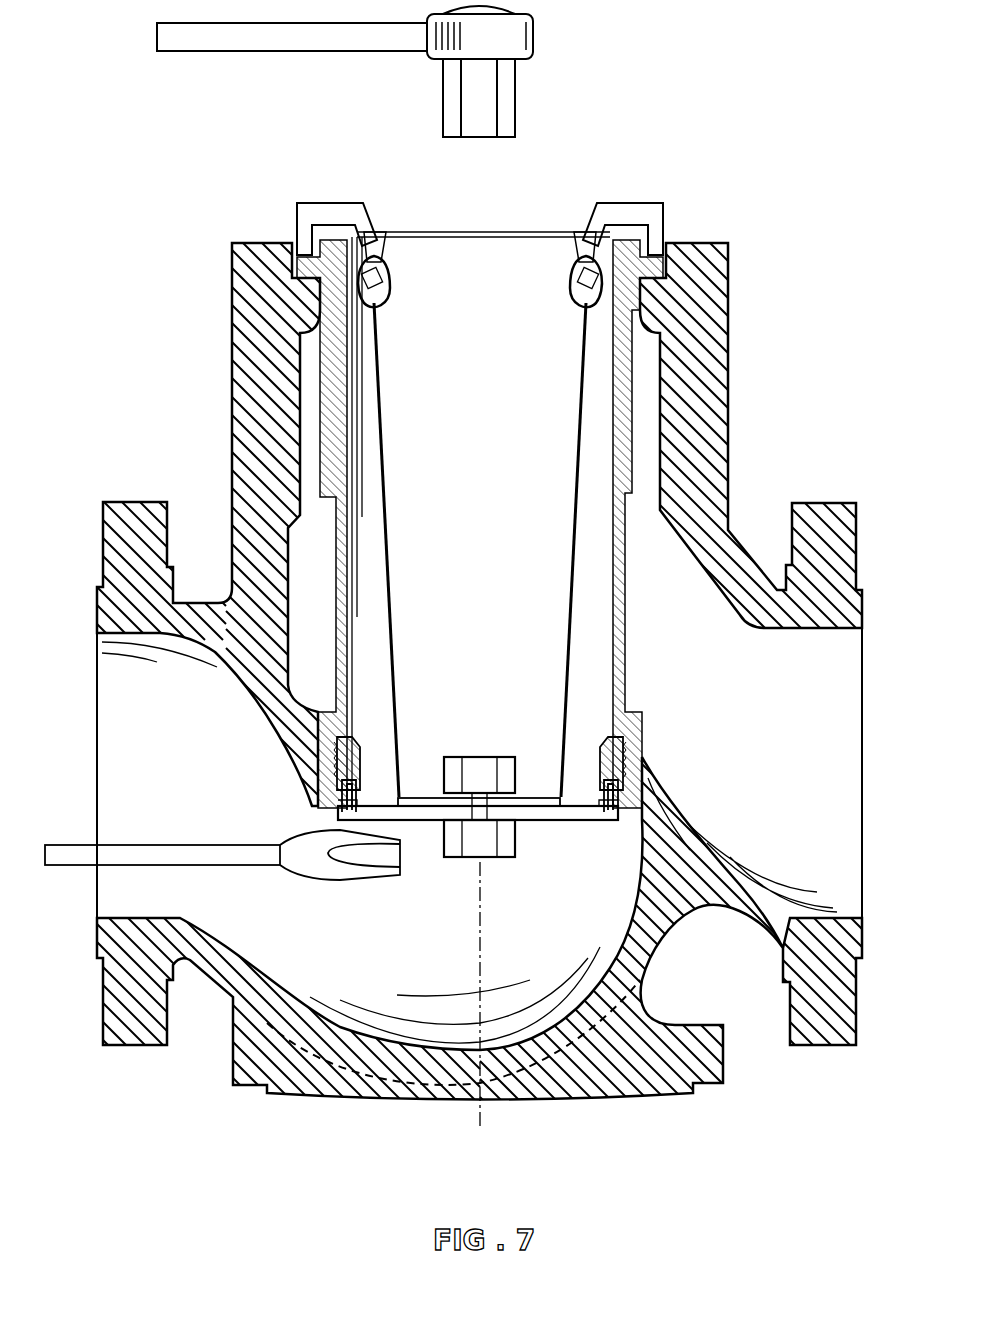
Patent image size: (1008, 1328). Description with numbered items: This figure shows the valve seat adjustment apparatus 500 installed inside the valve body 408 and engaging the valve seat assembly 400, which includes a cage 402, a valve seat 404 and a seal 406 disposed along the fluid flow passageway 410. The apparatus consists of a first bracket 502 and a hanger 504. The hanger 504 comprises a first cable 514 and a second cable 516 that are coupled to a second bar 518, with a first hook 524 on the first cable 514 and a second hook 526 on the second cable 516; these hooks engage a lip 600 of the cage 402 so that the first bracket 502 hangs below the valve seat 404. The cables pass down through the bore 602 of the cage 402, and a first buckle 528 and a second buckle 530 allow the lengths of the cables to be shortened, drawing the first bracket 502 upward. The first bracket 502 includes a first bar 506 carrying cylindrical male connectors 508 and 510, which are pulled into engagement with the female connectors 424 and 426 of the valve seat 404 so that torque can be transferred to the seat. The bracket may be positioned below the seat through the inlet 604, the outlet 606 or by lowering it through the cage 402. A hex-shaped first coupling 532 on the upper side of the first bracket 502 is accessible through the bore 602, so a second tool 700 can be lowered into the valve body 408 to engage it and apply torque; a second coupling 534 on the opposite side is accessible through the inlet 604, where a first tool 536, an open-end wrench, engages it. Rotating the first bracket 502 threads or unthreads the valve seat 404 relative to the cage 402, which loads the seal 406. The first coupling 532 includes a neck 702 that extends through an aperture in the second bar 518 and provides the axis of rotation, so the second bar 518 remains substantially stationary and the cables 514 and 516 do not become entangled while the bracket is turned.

The second tool 700 is at (533, 40).
The first hook 524 is at (308, 210).
The second hook 526 is at (650, 212).
The first buckle 528 is at (378, 268).
The second buckle 530 is at (580, 265).
The lip 600 is at (633, 238).
The valve body 408 is at (708, 268).
The bore 602 is at (600, 322).
The first cable 514 is at (380, 362).
The second cable 516 is at (580, 362).
The hanger 504 is at (532, 752).
The valve seat assembly 400 is at (642, 664).
The valve seat 404 is at (690, 759).
The outlet 606 is at (862, 663).
The cage 402 is at (632, 740).
The female connector 426 is at (620, 778).
The female connector 424 is at (345, 765).
The first coupling 532 is at (470, 757).
The second bar 518 is at (430, 797).
The male connector 508 is at (350, 800).
The male connector 510 is at (608, 815).
The inlet 604 is at (97, 800).
The neck 702 is at (490, 797).
The seal 406 is at (642, 800).
The first tool 536 is at (292, 878).
The first bar 506 is at (440, 822).
The first bracket 502 is at (538, 886).
The fluid flow passageway 410 is at (321, 958).
The second coupling 534 is at (460, 862).
The valve seat adjustment apparatus 500 is at (494, 922).